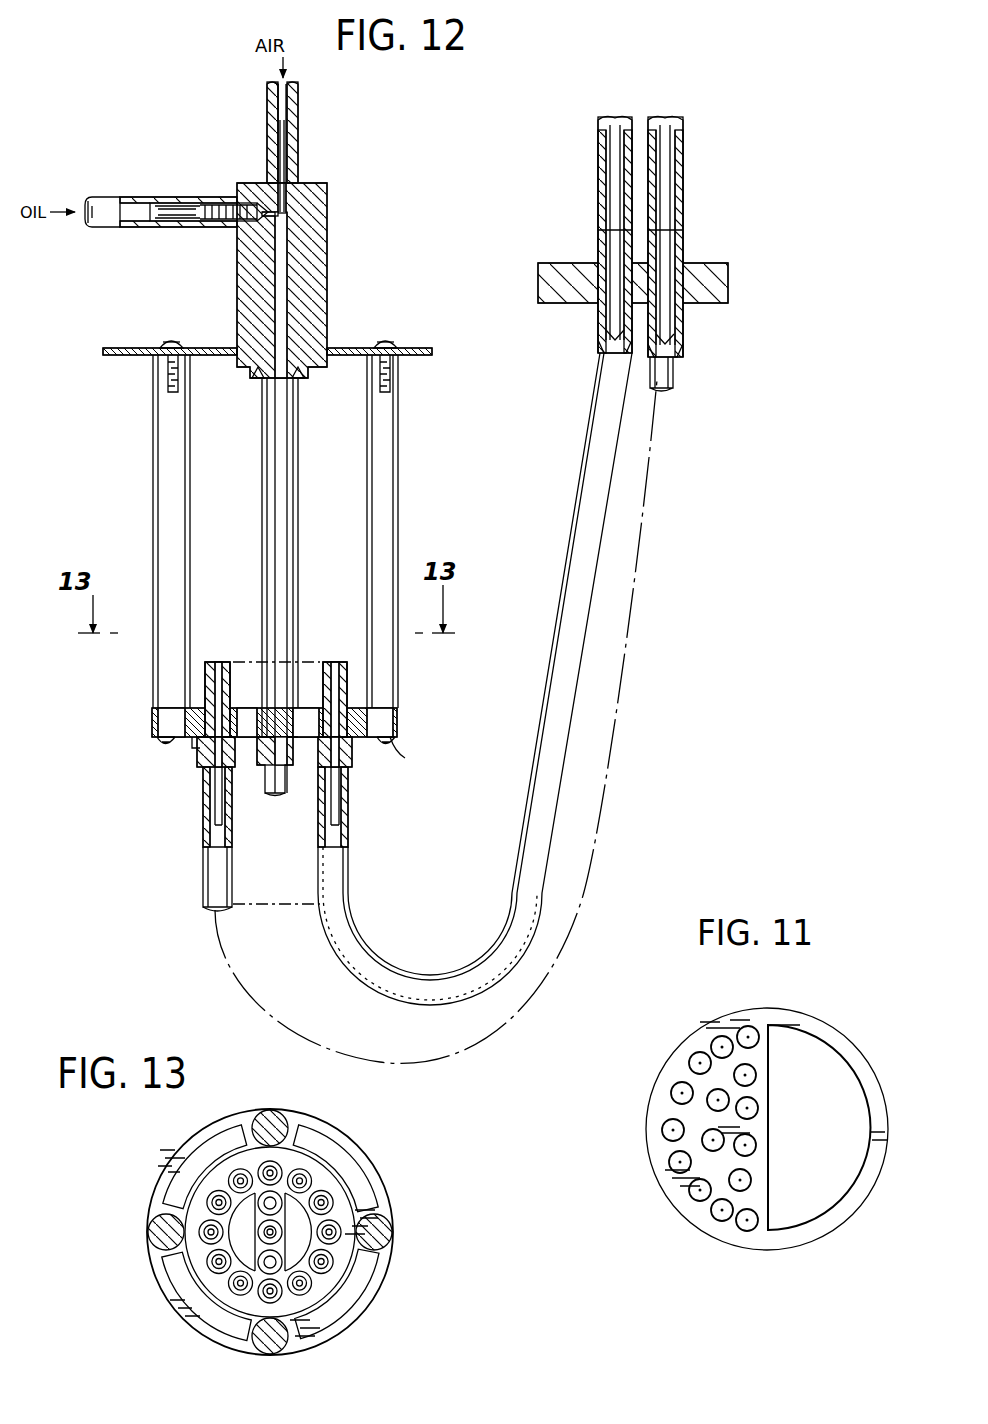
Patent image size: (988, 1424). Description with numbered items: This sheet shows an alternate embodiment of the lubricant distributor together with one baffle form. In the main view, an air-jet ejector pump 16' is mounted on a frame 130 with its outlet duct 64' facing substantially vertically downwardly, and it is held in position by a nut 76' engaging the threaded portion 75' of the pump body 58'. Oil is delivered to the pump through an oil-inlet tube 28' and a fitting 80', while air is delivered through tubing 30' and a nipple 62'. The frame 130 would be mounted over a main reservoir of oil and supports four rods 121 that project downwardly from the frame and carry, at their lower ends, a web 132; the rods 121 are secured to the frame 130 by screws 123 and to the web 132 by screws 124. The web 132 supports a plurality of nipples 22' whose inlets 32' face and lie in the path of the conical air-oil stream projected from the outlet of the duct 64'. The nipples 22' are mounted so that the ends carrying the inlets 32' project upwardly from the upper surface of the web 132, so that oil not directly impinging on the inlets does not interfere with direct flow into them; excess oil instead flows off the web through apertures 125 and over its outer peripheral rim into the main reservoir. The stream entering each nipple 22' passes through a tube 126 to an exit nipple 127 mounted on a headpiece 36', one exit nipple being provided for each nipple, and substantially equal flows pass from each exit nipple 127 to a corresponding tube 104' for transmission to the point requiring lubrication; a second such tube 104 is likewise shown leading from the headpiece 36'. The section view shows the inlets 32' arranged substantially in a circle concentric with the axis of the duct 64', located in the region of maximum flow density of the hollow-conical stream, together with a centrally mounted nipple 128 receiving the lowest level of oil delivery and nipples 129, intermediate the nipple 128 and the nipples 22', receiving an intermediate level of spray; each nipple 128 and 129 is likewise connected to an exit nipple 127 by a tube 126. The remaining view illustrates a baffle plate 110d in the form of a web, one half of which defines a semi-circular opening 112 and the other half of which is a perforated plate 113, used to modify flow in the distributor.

In FIG. 12, the air-jet ejector pump 16' is at (239, 409).
In FIG. 12, the nipples 22' is at (284, 792).
In FIG. 13, the nipples 22' is at (220, 1232).
In FIG. 12, the oil-inlet tube 28' is at (157, 188).
In FIG. 12, the tubing 30' is at (308, 132).
In FIG. 12, the inlets 32' is at (283, 673).
In FIG. 13, the inlets 32' is at (337, 1205).
In FIG. 12, the headpiece 36' is at (662, 285).
In FIG. 12, the pump body 58' is at (306, 280).
In FIG. 12, the nipple 62' is at (318, 148).
In FIG. 12, the outlet duct 64' is at (323, 474).
In FIG. 12, the threaded portion 75' is at (239, 391).
In FIG. 12, the nut 76' is at (323, 396).
In FIG. 12, the fitting 80' is at (209, 182).
In FIG. 12, the connector tube 104 is at (696, 236).
In FIG. 12, the tube 104' is at (577, 234).
In FIG. 11, the baffle plate 110d is at (830, 1028).
In FIG. 11, the semi-circular opening 112 is at (858, 1110).
In FIG. 11, the perforated plate 113 is at (758, 1163).
In FIG. 12, the rods 121 is at (160, 522).
In FIG. 13, the rods 121 is at (274, 1112).
In FIG. 12, the screws 123 is at (167, 338).
In FIG. 12, the screws 124 is at (405, 764).
In FIG. 13, the apertures 125 is at (197, 1150).
In FIG. 12, the tube 126 is at (204, 885).
In FIG. 12, the exit nipple 127 is at (599, 243).
In FIG. 12, the nipple 128 is at (282, 655).
In FIG. 13, the nipple 128 is at (278, 1238).
In FIG. 13, the nipples 129 is at (263, 1197).
In FIG. 12, the frame 130 is at (212, 347).
In FIG. 12, the web 132 is at (258, 855).
In FIG. 13, the web 132 is at (250, 1190).